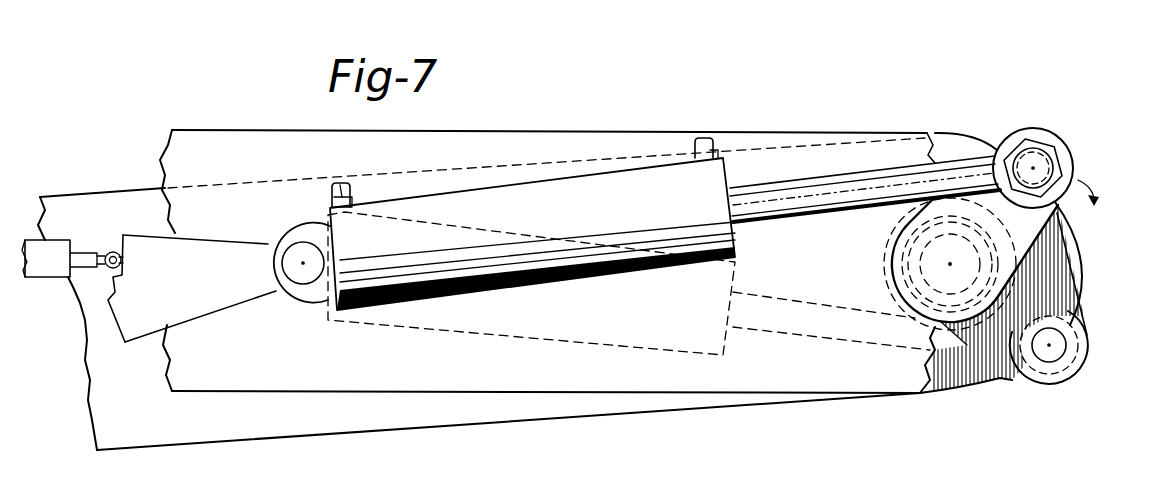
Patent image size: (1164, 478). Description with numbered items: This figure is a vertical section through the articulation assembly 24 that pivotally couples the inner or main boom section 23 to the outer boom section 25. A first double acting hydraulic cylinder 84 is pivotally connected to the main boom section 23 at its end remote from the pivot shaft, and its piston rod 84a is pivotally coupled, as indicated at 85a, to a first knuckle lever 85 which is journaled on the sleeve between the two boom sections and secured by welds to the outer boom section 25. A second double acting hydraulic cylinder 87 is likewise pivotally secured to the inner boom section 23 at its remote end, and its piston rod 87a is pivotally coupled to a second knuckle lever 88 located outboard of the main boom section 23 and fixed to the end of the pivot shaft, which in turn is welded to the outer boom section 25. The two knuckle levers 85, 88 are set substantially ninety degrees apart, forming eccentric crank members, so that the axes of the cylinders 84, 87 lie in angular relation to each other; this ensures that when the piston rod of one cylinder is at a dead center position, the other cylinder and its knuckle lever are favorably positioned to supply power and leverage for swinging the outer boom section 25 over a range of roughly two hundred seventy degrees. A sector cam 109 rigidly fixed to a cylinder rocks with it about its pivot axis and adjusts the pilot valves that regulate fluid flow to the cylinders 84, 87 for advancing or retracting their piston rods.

The inner boom section 23 is at (495, 131).
The articulation assembly 24 is at (982, 103).
The outer boom section 25 is at (57, 198).
The first double acting hydraulic cylinder 84 is at (687, 357).
The piston rod 84a is at (877, 343).
The first knuckle lever 85 is at (1000, 378).
The pivotal coupling 85a is at (1068, 340).
The second double acting hydraulic cylinder 87 is at (330, 205).
The piston rod 87a is at (828, 212).
The second knuckle lever 88 is at (1033, 223).
The sector cam 109 is at (145, 236).